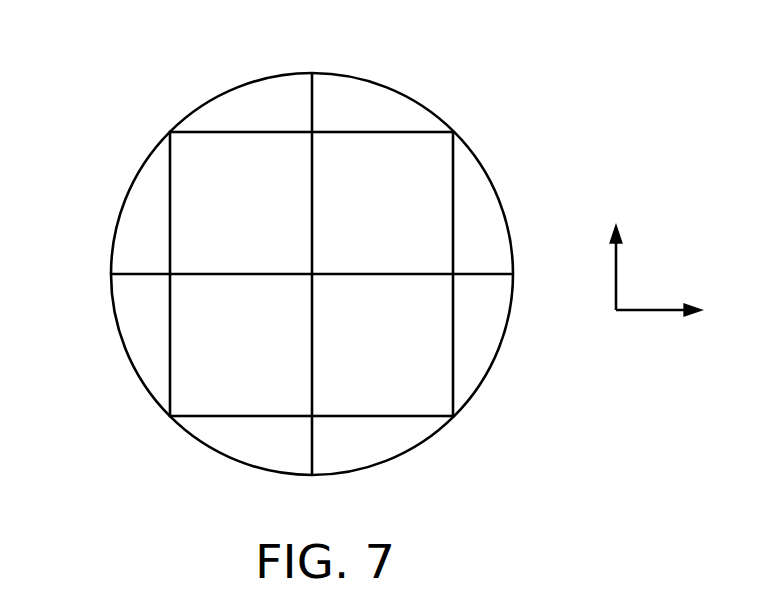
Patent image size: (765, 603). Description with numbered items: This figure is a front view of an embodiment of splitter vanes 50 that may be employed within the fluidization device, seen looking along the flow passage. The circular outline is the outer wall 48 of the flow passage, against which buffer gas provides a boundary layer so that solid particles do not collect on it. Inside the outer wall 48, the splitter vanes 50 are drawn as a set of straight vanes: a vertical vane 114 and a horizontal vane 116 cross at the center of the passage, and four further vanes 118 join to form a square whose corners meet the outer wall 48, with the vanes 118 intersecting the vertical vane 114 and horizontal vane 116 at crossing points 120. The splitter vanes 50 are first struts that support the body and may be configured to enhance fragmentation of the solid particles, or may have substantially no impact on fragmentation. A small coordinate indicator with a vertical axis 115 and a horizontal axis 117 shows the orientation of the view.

The outer wall 48 is at (487, 173).
The splitter vanes 50 is at (98, 212).
The vertical center line 114 is at (313, 98).
The y-axis 115 is at (612, 273).
The horizontal center line 116 is at (383, 275).
The x-axis 117 is at (648, 313).
The square edge 118 is at (171, 205).
The square edge intersection 120 is at (240, 132).